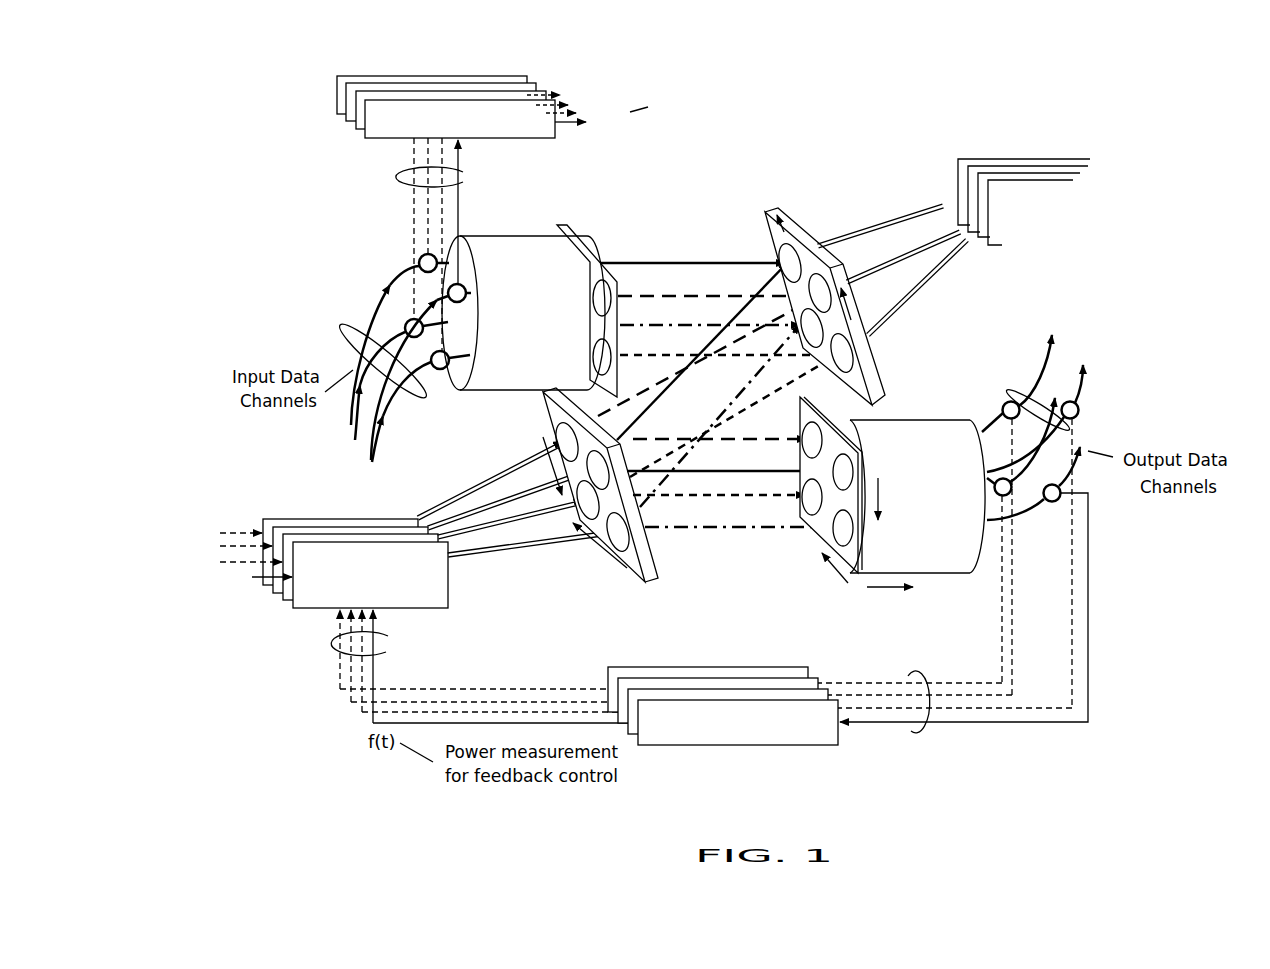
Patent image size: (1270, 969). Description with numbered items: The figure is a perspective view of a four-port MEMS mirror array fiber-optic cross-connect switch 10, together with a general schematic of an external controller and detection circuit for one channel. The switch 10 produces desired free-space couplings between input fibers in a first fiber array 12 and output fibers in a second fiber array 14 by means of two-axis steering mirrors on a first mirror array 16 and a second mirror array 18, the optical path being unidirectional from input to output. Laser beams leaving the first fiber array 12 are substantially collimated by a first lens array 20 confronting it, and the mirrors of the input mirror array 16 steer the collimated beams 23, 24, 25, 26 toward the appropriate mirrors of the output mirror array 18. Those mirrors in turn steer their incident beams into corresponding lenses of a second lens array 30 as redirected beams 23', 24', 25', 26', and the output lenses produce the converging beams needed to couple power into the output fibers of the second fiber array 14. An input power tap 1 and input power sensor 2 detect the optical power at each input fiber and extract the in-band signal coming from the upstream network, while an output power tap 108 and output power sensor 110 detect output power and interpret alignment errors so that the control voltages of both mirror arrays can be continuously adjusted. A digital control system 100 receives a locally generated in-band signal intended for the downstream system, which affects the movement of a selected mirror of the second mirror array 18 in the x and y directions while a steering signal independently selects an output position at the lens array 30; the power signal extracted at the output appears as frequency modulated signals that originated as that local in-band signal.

The input power tap 1 is at (423, 255).
The input power sensor 2 is at (358, 140).
The fiber-optic cross-connect switch 10 is at (1111, 214).
The first fiber array 12 is at (505, 232).
The second fiber array 14 is at (930, 513).
The first mirror array 16 is at (888, 392).
The second mirror array 18 is at (658, 582).
The first lens array 20 is at (565, 221).
The collimated beam 23 is at (692, 250).
The collimated beam 24 is at (716, 283).
The collimated beam 25 is at (710, 312).
The collimated beam 26 is at (727, 343).
The redirected beam 23' is at (732, 459).
The redirected beam 24' is at (719, 428).
The redirected beam 25' is at (743, 540).
The redirected beam 26' is at (719, 508).
The second lens array 30 is at (818, 542).
The digital control system 100 is at (992, 150).
The output power tap 108 is at (1060, 500).
The output power sensor 110 is at (772, 665).